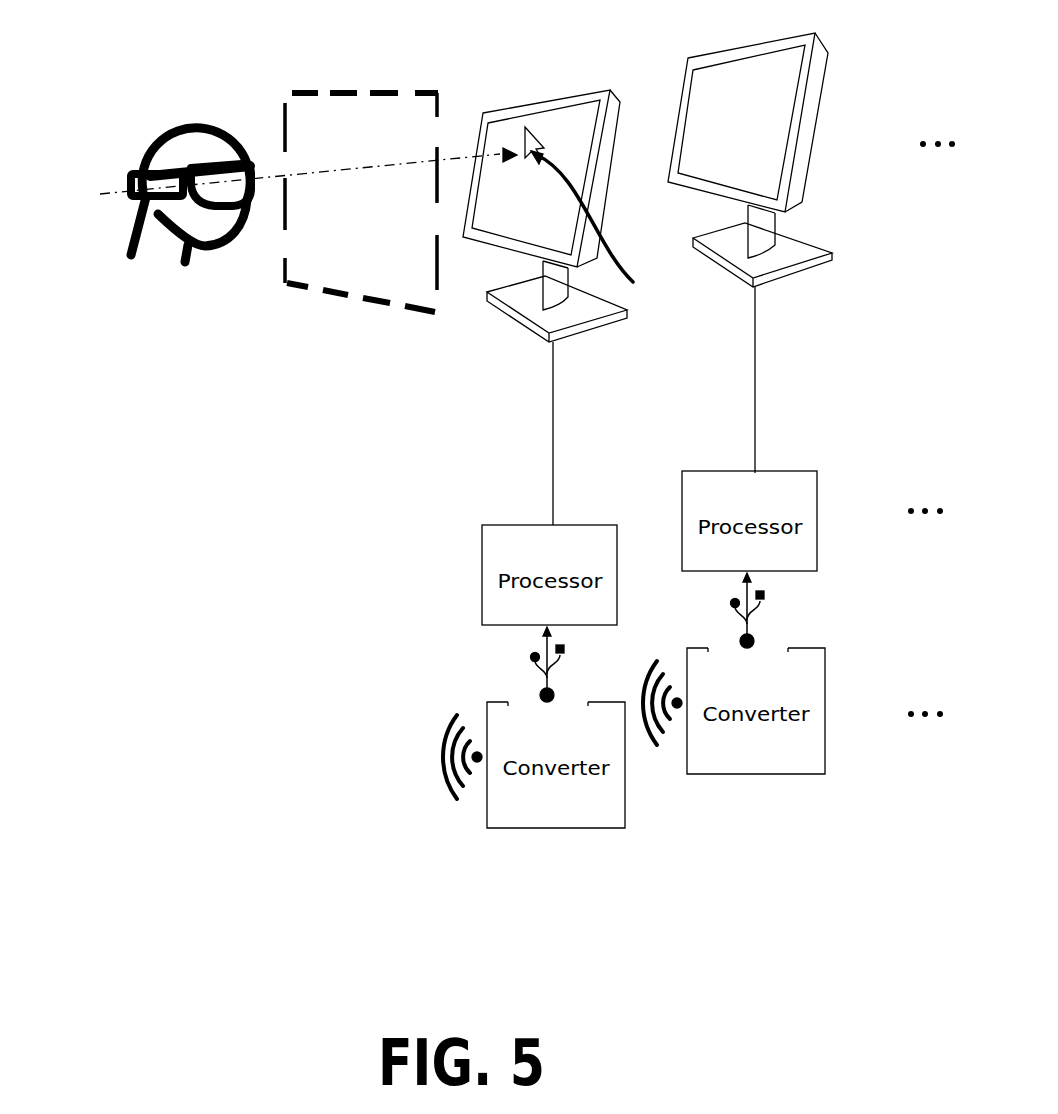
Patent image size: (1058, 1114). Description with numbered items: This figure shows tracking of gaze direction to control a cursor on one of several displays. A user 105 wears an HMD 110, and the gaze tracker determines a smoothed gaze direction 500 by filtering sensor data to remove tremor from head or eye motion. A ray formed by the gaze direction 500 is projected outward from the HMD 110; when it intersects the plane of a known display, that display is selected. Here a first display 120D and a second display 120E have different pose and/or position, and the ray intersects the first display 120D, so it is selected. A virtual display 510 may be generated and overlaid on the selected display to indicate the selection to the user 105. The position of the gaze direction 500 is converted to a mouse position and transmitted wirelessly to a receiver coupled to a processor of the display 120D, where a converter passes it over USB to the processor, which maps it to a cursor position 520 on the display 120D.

The user 105 is at (191, 175).
The HMD 110 is at (271, 179).
The virtual display 510 is at (361, 183).
The gaze direction 500 is at (428, 163).
The first display 120D is at (545, 196).
The second display 120E is at (750, 146).
The cursor position 520 is at (609, 228).